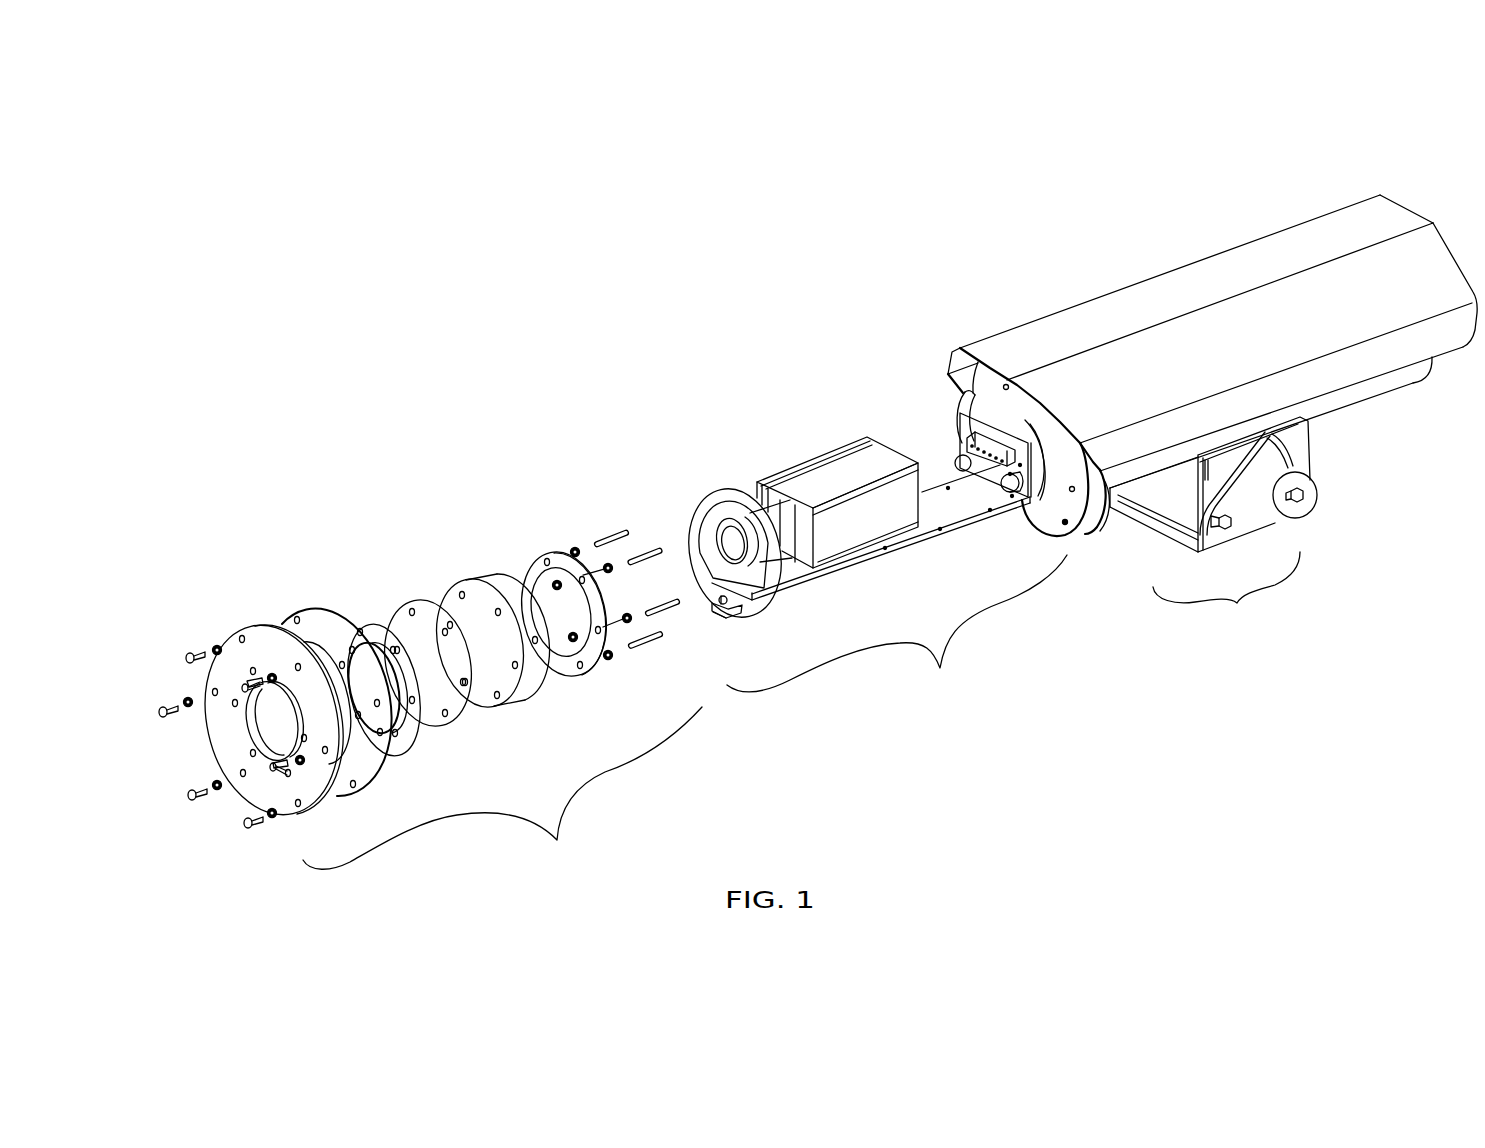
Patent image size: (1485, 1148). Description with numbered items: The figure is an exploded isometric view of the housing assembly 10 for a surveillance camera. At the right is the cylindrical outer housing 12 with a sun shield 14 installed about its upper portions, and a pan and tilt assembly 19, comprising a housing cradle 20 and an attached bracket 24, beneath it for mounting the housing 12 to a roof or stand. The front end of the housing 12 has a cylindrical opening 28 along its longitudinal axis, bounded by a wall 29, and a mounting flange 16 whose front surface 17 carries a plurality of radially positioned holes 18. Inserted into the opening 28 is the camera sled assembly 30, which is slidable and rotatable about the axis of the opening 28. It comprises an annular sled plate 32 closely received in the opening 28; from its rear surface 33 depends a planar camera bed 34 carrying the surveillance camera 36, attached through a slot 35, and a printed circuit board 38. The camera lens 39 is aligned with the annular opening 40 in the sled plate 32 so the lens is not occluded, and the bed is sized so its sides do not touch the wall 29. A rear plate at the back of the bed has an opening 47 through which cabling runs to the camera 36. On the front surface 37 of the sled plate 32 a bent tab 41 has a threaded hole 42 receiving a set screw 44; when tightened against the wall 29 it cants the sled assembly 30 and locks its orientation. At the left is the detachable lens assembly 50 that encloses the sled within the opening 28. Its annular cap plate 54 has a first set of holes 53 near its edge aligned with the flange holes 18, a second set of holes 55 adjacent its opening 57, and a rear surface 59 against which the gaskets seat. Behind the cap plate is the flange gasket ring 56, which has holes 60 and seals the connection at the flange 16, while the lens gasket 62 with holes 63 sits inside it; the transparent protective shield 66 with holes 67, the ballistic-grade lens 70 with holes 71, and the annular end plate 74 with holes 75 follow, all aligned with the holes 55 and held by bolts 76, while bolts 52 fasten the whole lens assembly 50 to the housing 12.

The housing assembly 10 is at (862, 318).
The outer housing 12 is at (1350, 398).
The sun shield 14 is at (1207, 262).
The mounting flange 16 is at (1095, 520).
The front surface 17 is at (1035, 513).
The holes 18 is at (1063, 524).
The pan and tilt assembly 19 is at (1226, 592).
The housing cradle 20 is at (1167, 497).
The bracket 24 is at (1243, 520).
The cylindrical opening 28 is at (1004, 385).
The wall 29 is at (1072, 492).
The camera sled assembly 30 is at (897, 628).
The sled plate 32 is at (728, 490).
The rear surface 33 is at (717, 482).
The camera bed 34 is at (918, 545).
The slot 35 is at (770, 590).
The surveillance camera 36 is at (825, 458).
The front surface 37 is at (697, 505).
The printed circuit board 38 is at (958, 430).
The camera lens 39 is at (730, 547).
The annular opening 40 is at (703, 547).
The tab 41 is at (720, 621).
The threaded hole 42 is at (733, 614).
The set screw 44 is at (718, 606).
The opening 47 is at (1000, 393).
The lens assembly 50 is at (502, 791).
The bolts 52 is at (193, 650).
The first set of holes 53 is at (242, 636).
The cap plate 54 is at (252, 623).
The second set of holes 55 is at (289, 687).
The spacer ring 56 is at (312, 607).
The opening 57 is at (250, 737).
The rear surface 59 is at (323, 805).
The holes 60 is at (356, 784).
The lens gasket 62 is at (367, 618).
The holes 63 is at (413, 704).
The protective shield 66 is at (412, 598).
The holes 67 is at (447, 716).
The lens 70 is at (483, 573).
The holes 71 is at (498, 698).
The annular end plate 74 is at (598, 667).
The holes 75 is at (573, 666).
The bolts 76 is at (610, 532).